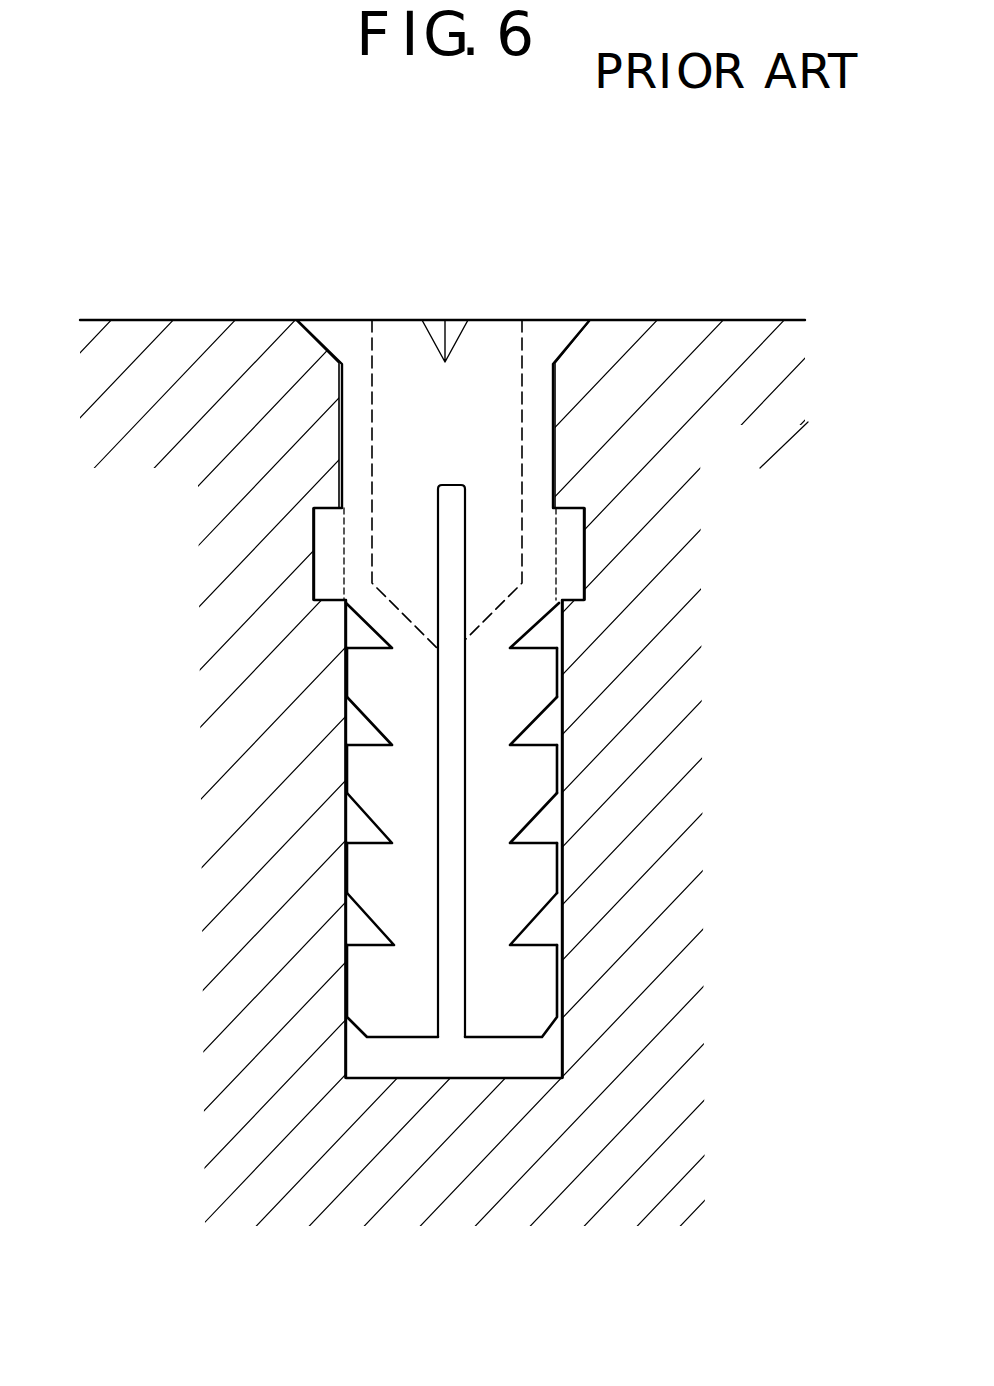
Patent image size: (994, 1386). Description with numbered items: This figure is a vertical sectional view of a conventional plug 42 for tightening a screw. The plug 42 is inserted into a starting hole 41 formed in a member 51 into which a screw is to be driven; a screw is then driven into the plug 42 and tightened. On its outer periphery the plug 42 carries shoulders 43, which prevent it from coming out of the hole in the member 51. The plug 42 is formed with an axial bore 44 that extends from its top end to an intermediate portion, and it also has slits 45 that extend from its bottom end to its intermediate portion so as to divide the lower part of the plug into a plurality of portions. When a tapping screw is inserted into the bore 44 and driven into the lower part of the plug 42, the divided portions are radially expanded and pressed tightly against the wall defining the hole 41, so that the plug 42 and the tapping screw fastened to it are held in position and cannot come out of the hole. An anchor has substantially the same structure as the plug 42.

The member 51 is at (162, 352).
The axial bore 44 is at (522, 398).
The starting hole 41 is at (346, 813).
The plug 42 is at (361, 911).
The shoulders 43 is at (363, 743).
The slits 45 is at (440, 978).